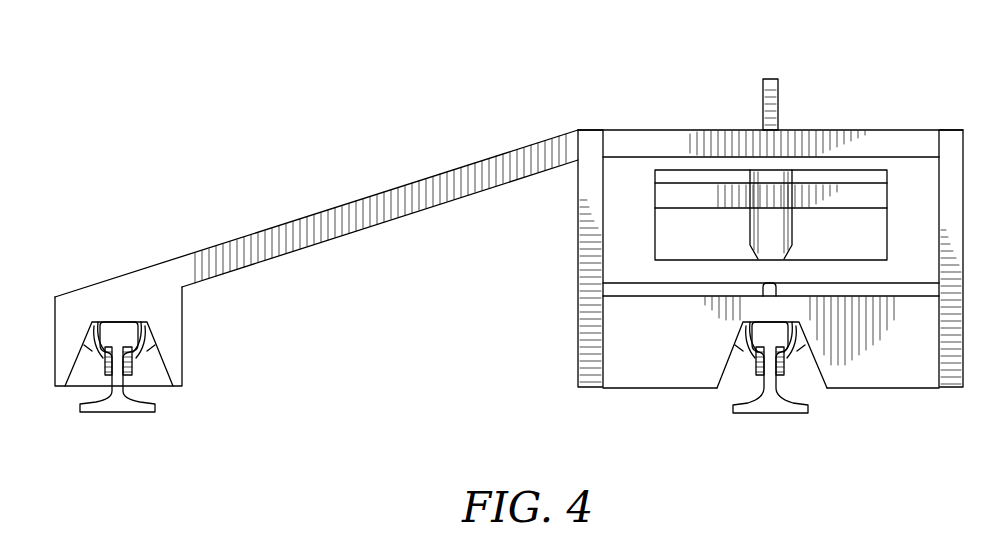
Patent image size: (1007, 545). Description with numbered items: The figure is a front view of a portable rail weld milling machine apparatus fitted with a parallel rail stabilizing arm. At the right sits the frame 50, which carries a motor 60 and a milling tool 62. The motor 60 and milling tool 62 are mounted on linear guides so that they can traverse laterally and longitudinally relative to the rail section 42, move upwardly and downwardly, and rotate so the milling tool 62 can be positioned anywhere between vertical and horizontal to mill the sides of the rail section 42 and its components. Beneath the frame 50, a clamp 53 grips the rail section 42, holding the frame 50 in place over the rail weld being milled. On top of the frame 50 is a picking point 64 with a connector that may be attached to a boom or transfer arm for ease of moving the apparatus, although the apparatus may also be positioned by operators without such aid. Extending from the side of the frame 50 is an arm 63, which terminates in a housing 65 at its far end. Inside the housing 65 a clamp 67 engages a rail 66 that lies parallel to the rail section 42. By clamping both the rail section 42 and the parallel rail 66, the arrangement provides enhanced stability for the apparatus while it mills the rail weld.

The rail section 42 is at (772, 388).
The frame 50 is at (951, 150).
The clamp 53 is at (747, 355).
The motor 60 is at (774, 228).
The milling tool 62 is at (772, 290).
The arm 63 is at (290, 238).
The picking point 64 is at (760, 99).
The housing 65 is at (120, 300).
The rail 66 is at (120, 385).
The clamp 67 is at (93, 353).